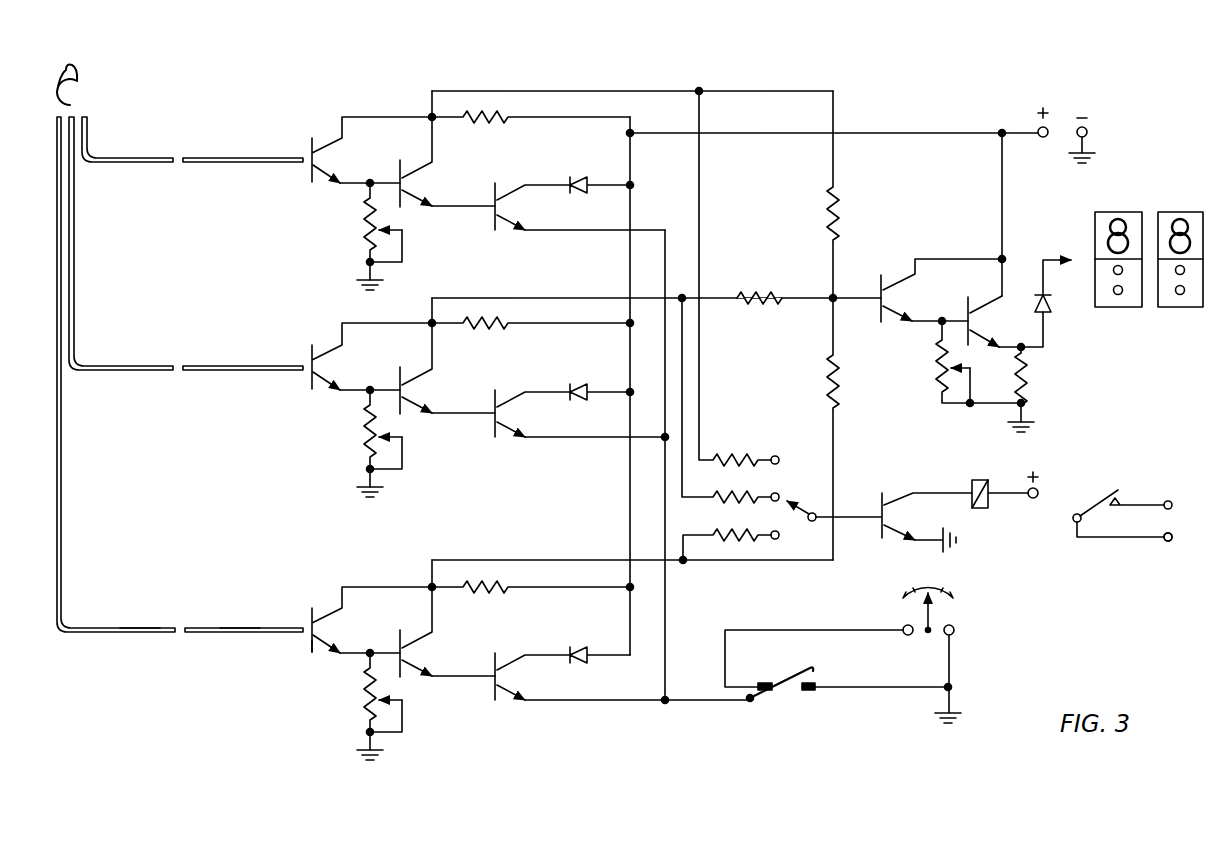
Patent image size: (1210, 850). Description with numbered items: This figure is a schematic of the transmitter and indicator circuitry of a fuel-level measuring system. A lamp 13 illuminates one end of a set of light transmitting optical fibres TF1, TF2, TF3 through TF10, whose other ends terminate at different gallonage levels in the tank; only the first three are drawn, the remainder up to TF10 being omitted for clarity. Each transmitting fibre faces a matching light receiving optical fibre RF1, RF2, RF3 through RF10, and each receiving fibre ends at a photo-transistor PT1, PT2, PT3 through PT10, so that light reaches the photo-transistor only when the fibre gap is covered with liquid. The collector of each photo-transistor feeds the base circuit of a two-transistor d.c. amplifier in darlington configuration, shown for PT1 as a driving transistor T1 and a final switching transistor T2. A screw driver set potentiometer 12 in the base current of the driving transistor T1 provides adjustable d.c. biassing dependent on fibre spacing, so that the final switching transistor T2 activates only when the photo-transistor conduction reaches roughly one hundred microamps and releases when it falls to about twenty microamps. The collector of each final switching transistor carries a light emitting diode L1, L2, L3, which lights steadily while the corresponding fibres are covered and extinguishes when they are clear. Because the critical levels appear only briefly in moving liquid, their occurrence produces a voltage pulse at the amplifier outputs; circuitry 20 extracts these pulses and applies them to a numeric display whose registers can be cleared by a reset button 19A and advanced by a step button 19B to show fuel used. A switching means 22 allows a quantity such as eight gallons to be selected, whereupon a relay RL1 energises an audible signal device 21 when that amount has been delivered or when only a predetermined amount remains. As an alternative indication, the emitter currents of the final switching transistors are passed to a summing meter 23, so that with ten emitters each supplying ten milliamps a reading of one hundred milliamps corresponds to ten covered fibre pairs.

The lamp 13 is at (83, 88).
The light transmitting optical fibre TF1 is at (128, 156).
The light transmitting optical fibre TF2 is at (127, 365).
The light transmitting optical fibre TF3 is at (117, 625).
The light transmitting optical fibre TF10 is at (128, 636).
The light receiving optical fibre RF1 is at (240, 157).
The light receiving optical fibre RF2 is at (225, 365).
The light receiving optical fibre RF3 is at (216, 626).
The light receiving optical fibre RF10 is at (228, 636).
The photo-transistor PT1 is at (304, 144).
The photo-transistor PT2 is at (305, 355).
The photo-transistor PT3 is at (305, 616).
The photo-transistor PT10 is at (305, 638).
The screw driver set potentiometer 12 is at (403, 253).
The driving transistor T1 is at (421, 185).
The final switching transistor T2 is at (505, 182).
The light emitting diode L1 is at (582, 180).
The light emitting diode L2 is at (581, 384).
The light emitting diode L3 is at (580, 648).
The pulse extracting circuitry 20 is at (940, 256).
The reset button 19A is at (1175, 275).
The step button 19B is at (1180, 296).
The switching means 22 is at (794, 493).
The relay RL1 is at (976, 479).
The audible signal device 21 is at (1175, 522).
The summing meter 23 is at (948, 614).